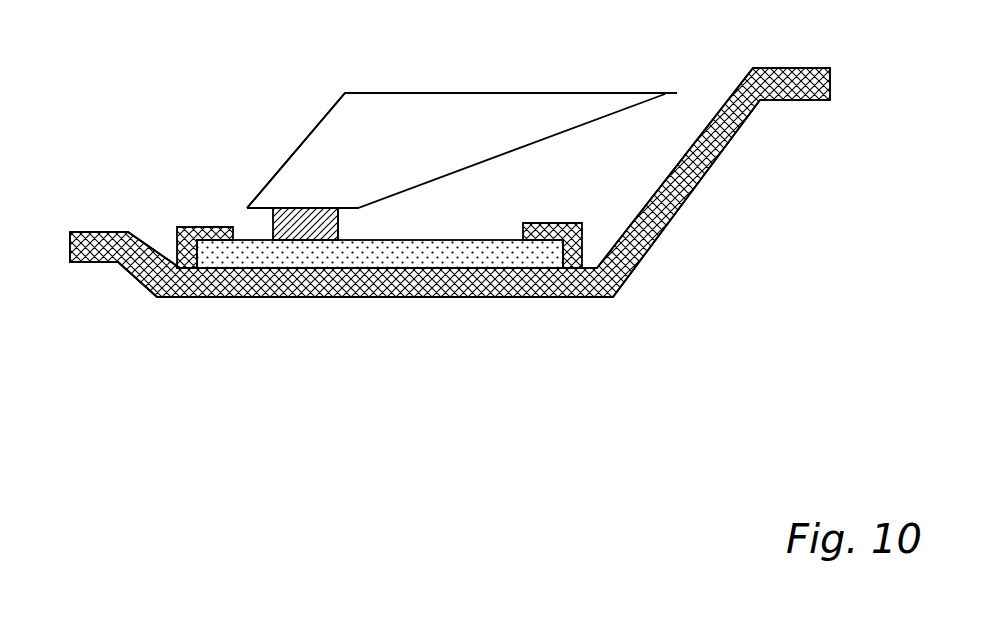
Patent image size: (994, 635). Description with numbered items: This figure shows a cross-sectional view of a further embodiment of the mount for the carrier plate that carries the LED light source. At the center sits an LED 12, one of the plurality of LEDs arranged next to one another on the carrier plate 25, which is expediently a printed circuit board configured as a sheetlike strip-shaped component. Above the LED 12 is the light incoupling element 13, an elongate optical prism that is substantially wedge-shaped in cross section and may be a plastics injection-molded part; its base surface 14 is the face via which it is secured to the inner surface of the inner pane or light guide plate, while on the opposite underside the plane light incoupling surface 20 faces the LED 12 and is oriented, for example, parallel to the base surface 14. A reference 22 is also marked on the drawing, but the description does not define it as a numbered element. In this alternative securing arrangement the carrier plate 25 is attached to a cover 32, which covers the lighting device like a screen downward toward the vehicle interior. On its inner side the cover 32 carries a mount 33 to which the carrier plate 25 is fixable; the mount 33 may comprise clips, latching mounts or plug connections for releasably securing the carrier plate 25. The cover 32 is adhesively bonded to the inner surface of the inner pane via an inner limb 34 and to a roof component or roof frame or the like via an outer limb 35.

The LED 12 is at (270, 223).
The light incoupling element 13 is at (533, 127).
The base surface 14 is at (554, 92).
The light incoupling surface 20 is at (352, 218).
The cover underside 22 is at (285, 160).
The carrier plate 25 is at (472, 255).
The cover 32 is at (373, 302).
The mount 33 is at (202, 231).
The inner limb 34 is at (762, 85).
The outer limb 35 is at (125, 243).